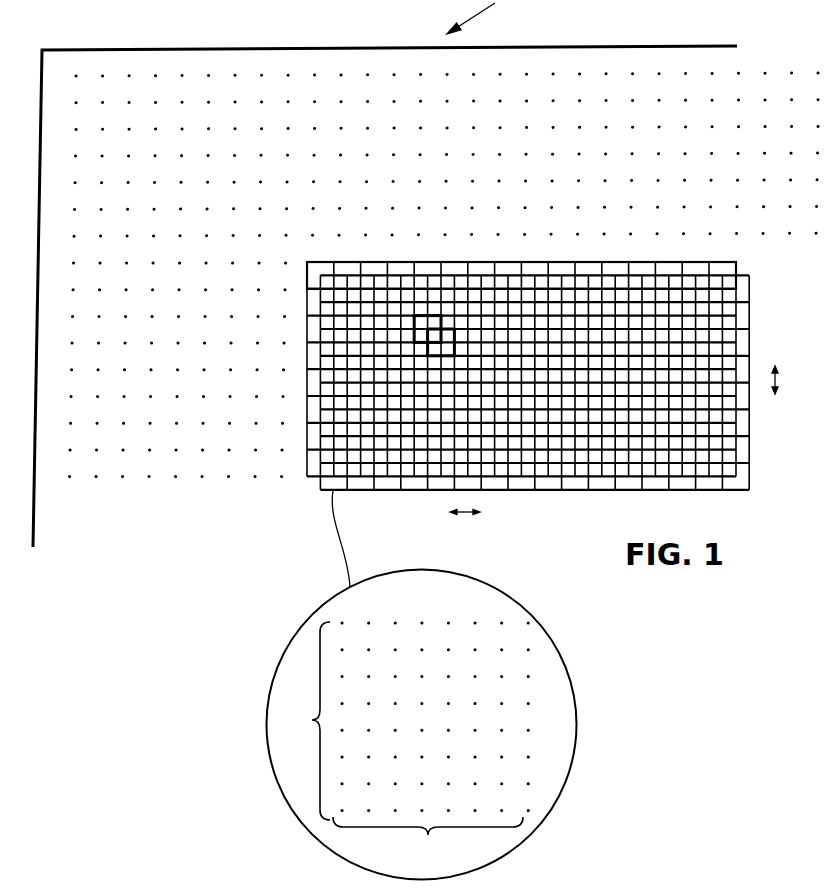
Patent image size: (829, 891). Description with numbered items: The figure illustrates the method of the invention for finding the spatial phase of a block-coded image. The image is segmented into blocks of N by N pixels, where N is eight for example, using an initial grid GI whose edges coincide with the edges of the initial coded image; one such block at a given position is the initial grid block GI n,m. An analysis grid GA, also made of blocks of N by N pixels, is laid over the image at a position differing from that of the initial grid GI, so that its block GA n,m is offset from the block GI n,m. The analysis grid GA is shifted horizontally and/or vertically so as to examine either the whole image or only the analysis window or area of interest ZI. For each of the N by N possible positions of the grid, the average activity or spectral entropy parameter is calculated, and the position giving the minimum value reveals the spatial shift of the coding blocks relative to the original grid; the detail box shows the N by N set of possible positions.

The initial grid GI is at (117, 50).
The initial grid block GI n,m is at (425, 325).
The area of interest ZI is at (484, 262).
The analysis grid block GA n,m is at (448, 350).
The analysis grid GA is at (390, 491).
The block size N is at (406, 744).